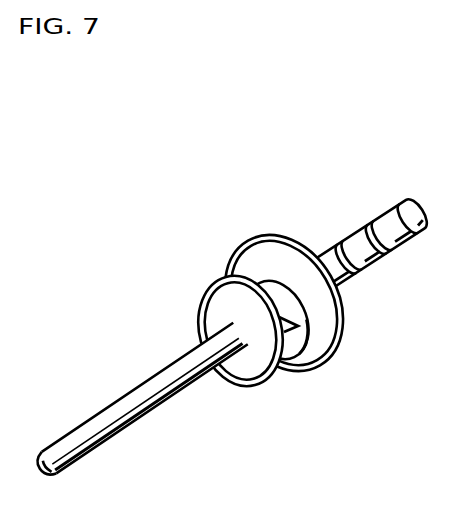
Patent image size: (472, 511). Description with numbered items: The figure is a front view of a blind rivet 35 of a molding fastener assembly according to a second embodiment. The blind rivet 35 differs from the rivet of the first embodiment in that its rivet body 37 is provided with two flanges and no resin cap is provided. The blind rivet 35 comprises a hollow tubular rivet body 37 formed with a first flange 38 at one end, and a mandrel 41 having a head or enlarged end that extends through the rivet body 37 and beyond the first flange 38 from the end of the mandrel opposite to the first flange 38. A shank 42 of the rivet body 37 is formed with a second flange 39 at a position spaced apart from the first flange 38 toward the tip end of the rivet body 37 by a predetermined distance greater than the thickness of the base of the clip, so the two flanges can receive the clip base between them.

The blind rivet 35 is at (210, 243).
The rivet body 37 is at (347, 236).
The first flange 38 is at (281, 372).
The second flange 39 is at (343, 341).
The mandrel 41 is at (118, 407).
The shank 42 is at (315, 361).